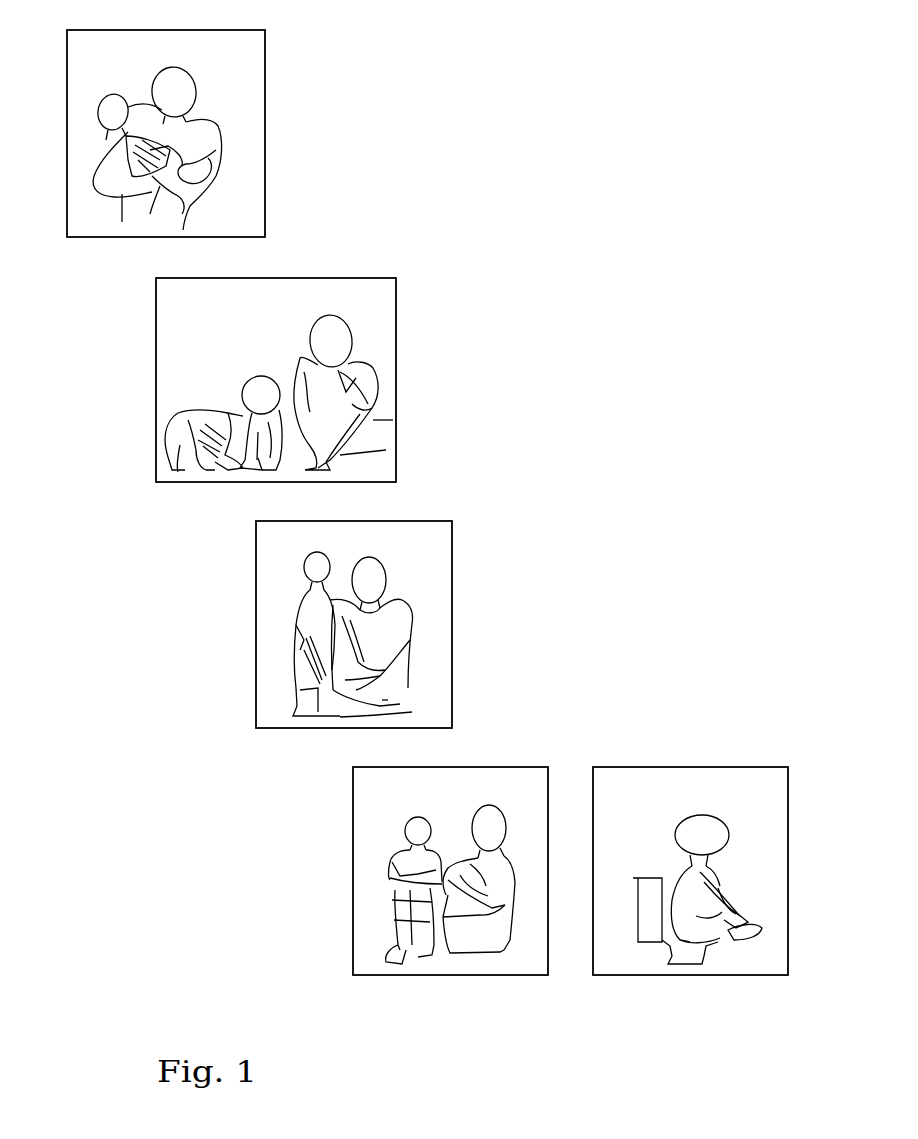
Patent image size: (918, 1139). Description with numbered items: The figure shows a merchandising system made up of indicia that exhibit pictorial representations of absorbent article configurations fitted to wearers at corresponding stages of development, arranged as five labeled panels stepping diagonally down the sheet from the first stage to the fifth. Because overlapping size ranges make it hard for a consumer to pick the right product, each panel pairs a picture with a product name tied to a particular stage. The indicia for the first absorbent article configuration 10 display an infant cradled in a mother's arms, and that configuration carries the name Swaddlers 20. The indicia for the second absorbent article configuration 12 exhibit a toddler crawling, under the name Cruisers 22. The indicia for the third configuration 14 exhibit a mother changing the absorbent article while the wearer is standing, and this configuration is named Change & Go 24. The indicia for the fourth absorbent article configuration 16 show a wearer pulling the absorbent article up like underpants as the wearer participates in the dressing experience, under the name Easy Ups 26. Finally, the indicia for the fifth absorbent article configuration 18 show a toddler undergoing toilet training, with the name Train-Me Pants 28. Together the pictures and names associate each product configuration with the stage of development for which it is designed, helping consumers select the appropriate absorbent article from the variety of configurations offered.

The first absorbent article configuration 10 is at (222, 141).
The second absorbent article configuration 12 is at (382, 387).
The third absorbent article configuration 14 is at (415, 630).
The fourth absorbent article configuration 16 is at (350, 870).
The fifth absorbent article configuration 18 is at (722, 882).
The Swaddlers 20 is at (233, 49).
The Cruisers 22 is at (338, 297).
The Change & Go 24 is at (432, 538).
The Easy Ups 26 is at (522, 795).
The Train-Me Pants 28 is at (775, 778).